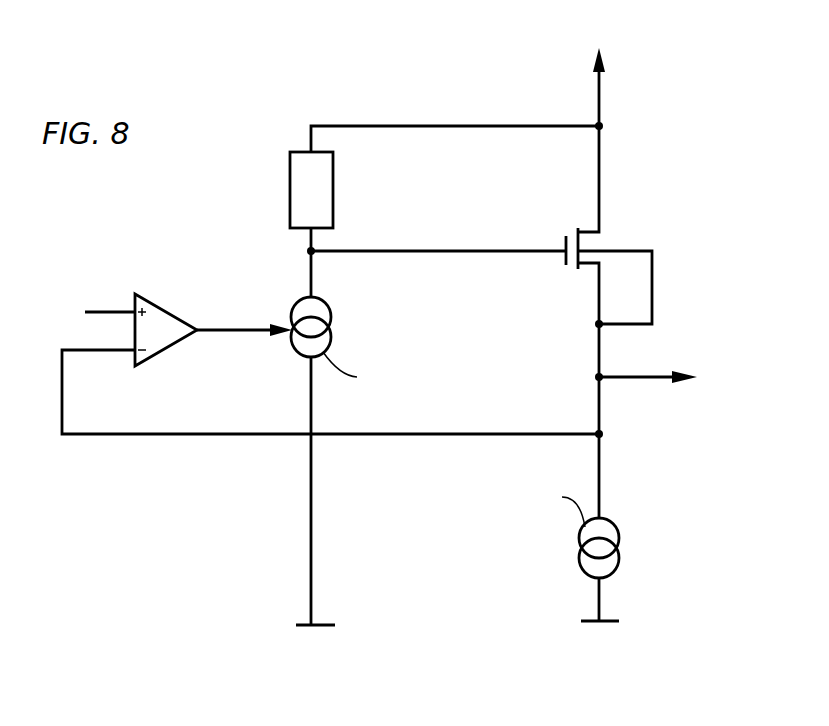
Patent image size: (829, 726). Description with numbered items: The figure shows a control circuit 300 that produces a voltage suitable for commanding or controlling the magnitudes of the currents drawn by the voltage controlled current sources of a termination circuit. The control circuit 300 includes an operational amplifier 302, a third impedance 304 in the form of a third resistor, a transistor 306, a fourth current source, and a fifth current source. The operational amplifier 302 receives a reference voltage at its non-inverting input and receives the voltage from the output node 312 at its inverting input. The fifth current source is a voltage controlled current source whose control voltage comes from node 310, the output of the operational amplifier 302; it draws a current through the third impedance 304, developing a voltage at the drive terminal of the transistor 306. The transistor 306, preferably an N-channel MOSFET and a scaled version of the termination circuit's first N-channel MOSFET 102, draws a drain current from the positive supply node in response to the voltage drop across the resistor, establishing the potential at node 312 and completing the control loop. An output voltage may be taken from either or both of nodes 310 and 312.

The control circuit 300 is at (250, 98).
The first N-channel MOSFET 102 is at (647, 184).
The operational amplifier 302 is at (167, 311).
The third impedance 304 is at (290, 193).
The transistor 306 is at (565, 242).
The node 310 is at (228, 332).
The output node 312 is at (652, 380).